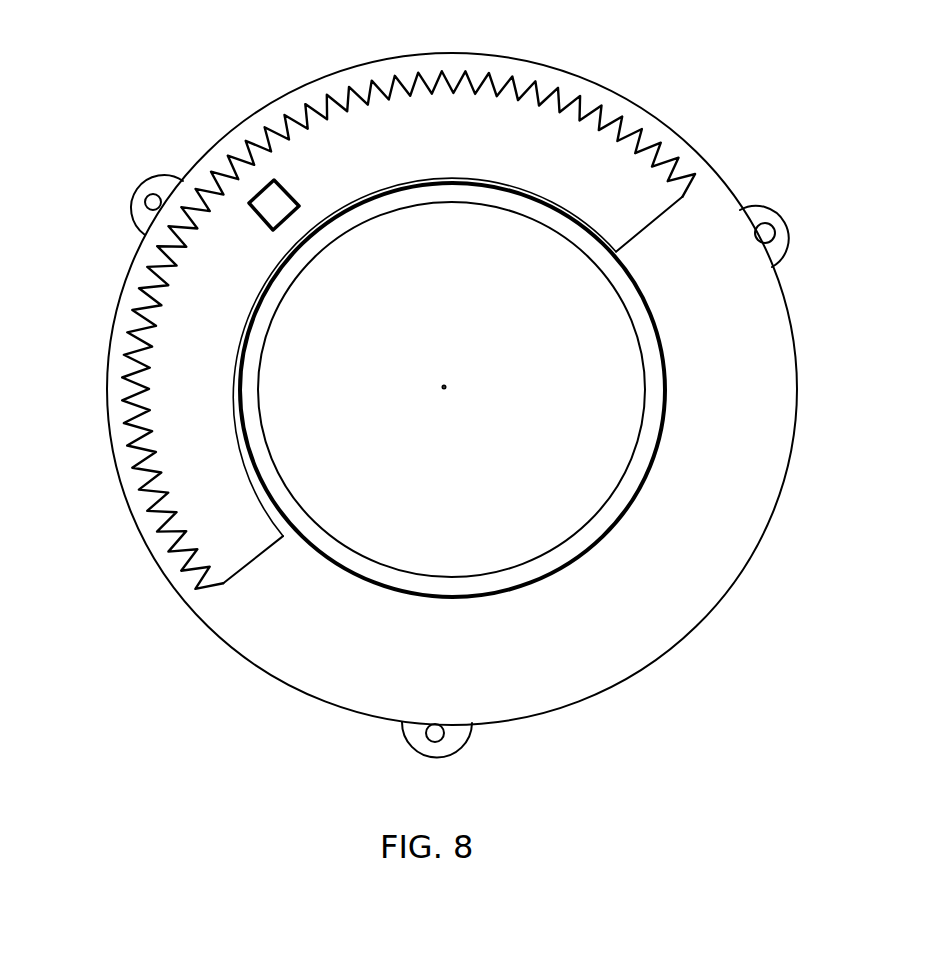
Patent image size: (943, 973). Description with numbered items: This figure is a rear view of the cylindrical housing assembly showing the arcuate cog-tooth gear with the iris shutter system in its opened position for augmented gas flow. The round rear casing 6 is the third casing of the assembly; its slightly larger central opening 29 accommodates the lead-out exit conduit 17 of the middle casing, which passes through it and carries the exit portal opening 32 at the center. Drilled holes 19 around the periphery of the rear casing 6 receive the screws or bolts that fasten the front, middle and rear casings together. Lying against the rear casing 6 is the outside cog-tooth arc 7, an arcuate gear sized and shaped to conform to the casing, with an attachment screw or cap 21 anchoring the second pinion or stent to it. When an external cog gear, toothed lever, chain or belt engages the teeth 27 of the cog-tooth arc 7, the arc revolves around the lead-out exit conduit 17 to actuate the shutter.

The rear cylindrical casing 6 is at (672, 643).
The cog-tooth arc 7 is at (217, 542).
The lead-out exit conduit 17 is at (633, 482).
The drilled holes 19 is at (152, 202).
The attachment screw or cap 21 is at (268, 198).
The teeth 27 is at (135, 345).
The central opening 29 is at (343, 571).
The exit portal opening 32 is at (443, 387).